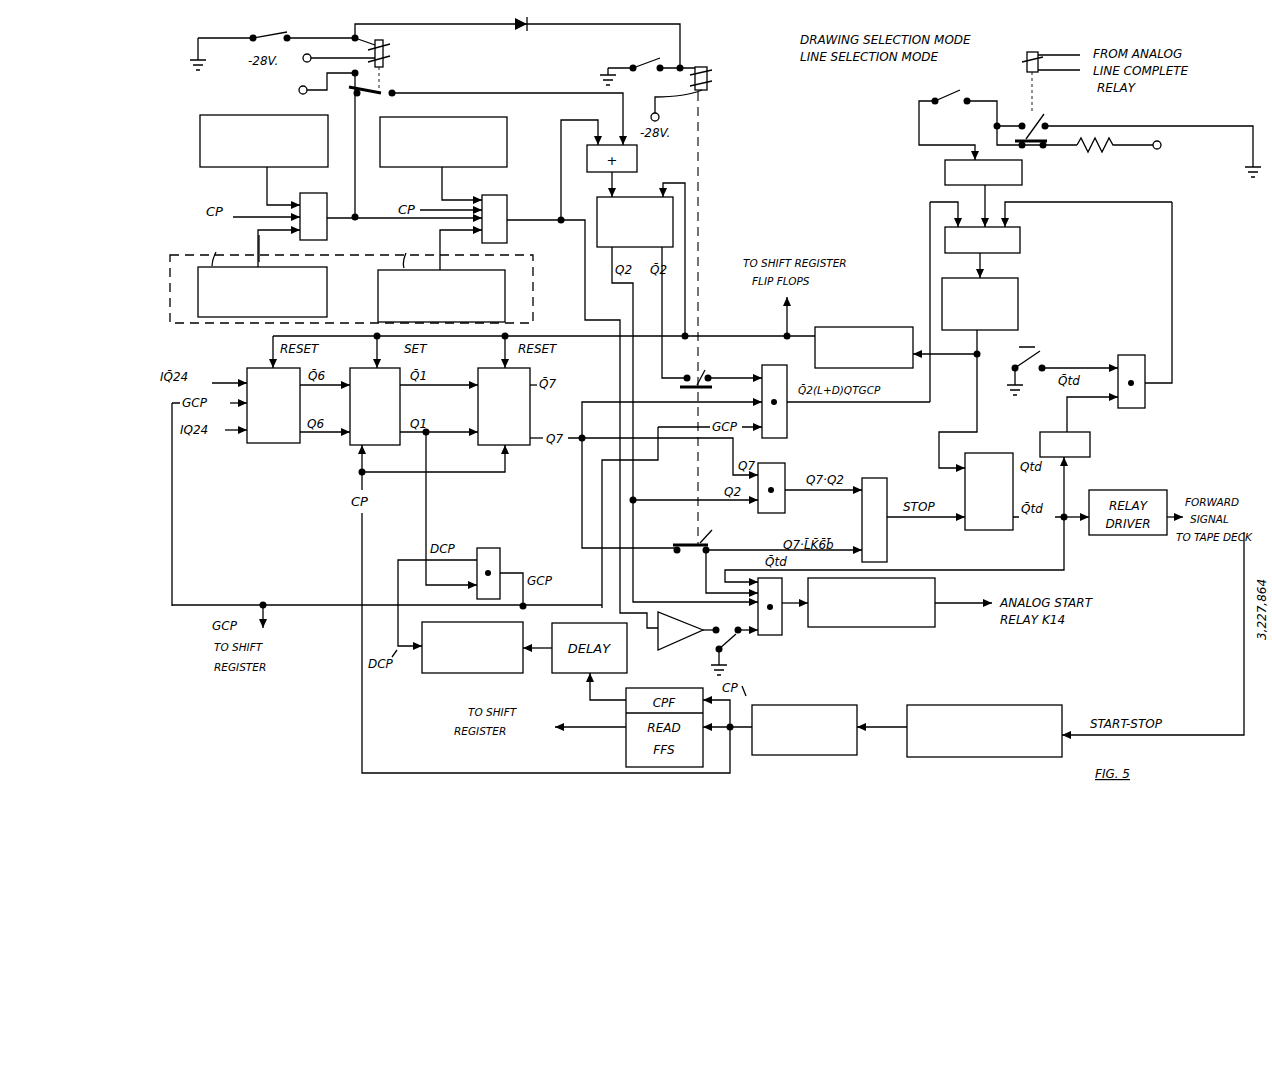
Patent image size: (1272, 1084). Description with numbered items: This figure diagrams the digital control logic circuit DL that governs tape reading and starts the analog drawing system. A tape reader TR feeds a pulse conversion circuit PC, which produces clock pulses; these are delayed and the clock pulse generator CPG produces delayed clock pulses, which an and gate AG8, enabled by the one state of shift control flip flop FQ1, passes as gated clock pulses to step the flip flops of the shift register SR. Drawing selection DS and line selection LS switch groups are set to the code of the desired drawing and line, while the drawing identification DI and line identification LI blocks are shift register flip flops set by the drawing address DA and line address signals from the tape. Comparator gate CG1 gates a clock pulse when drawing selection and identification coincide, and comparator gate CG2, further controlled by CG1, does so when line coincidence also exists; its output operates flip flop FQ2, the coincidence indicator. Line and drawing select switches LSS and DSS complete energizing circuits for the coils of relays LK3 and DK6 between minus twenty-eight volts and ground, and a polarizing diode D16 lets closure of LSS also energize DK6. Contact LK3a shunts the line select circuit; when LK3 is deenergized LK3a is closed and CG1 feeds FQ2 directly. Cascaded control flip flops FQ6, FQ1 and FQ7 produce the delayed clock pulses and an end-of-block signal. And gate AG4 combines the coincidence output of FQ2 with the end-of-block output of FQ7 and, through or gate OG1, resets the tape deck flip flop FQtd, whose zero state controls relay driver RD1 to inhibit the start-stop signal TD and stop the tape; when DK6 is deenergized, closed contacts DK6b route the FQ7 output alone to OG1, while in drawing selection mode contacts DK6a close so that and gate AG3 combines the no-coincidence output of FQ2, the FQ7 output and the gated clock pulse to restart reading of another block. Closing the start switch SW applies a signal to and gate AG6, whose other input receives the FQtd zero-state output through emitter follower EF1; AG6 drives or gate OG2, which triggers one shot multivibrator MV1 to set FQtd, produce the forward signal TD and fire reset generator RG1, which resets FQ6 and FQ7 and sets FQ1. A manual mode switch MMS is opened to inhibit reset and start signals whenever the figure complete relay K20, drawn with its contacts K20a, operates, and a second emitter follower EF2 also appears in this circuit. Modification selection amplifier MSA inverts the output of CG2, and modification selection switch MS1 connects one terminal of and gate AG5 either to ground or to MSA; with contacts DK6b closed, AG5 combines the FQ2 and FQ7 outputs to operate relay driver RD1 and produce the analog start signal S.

The line select switch LSS is at (272, 40).
The line select relay LK3 is at (390, 52).
The relay contact LK3a is at (486, 105).
The polarizing diode D16 is at (528, 31).
The drawing select switch DSS is at (647, 62).
The drawing select relay DK6 is at (701, 90).
The drawing selection DS is at (264, 129).
The line selection LS is at (443, 132).
The comparator gate CG1 is at (327, 236).
The comparator gate CG2 is at (500, 200).
The drawing identification DI is at (208, 250).
The drawing address signal DA is at (271, 248).
The line identification LI is at (399, 252).
The shift register SR is at (362, 289).
The coincidence indicator flip flop FQ2 is at (635, 222).
The control flip flop FQ6 is at (256, 405).
The shift control flip flop FQ1 is at (375, 406).
The control flip flop FQ7 is at (504, 406).
The tape deck flip flop FQtd is at (989, 491).
The reset generator RG1 is at (867, 327).
The relay contacts DK6a is at (712, 317).
The relay contacts DK6b is at (767, 558).
The and gate AG3 is at (787, 432).
The and gate AG4 is at (785, 470).
The and gate AG5 is at (782, 630).
The and gate AG6 is at (1135, 343).
The and gate AG8 is at (500, 560).
The or gate OG1 is at (892, 470).
The or gate OG2 is at (1020, 241).
The clock pulse generator CPG is at (465, 673).
The modification selection amplifier MSA is at (680, 646).
The modification selection switch MS1 is at (742, 640).
The relay driver RD1 is at (912, 629).
The analog start signal S is at (962, 593).
The pulse converter and delay circuit PC is at (820, 705).
The tape reader TR is at (1025, 698).
The manual mode switch MMS is at (950, 88).
The figure complete relay K20 is at (1027, 70).
The relay contact K20a is at (1125, 132).
The emitter follower EF2 is at (945, 163).
The emitter follower circuit EF1 is at (1046, 420).
The one shot multivibrator MV1 is at (1018, 306).
The start switch SW is at (1066, 350).
The start-stop signal TD is at (1153, 633).
The digital control logic circuit DL is at (204, 752).